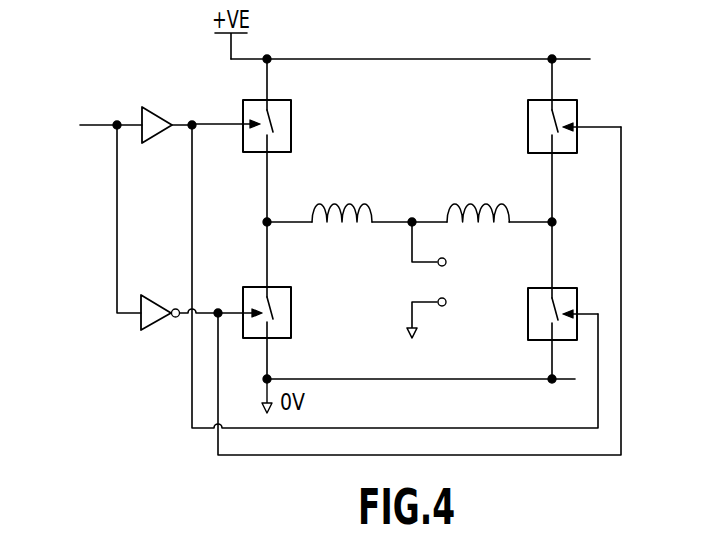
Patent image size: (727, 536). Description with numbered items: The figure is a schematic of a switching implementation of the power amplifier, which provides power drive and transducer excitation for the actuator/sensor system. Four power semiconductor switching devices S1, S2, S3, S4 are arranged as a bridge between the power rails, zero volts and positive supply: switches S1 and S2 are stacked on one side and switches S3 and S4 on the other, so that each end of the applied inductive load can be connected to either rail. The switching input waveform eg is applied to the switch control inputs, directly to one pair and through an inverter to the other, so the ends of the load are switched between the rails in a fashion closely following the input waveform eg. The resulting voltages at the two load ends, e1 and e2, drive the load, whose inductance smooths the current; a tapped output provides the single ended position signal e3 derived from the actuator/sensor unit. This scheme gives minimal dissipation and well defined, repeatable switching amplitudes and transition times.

The power semiconductor switching device S1 is at (257, 126).
The power semiconductor switching device S2 is at (271, 312).
The power semiconductor switching device S3 is at (559, 126).
The power semiconductor switching device S4 is at (547, 314).
The switching input waveform eg is at (96, 122).
The node voltage e1 is at (250, 219).
The node voltage e2 is at (569, 219).
The single ended position signal e3 is at (442, 280).